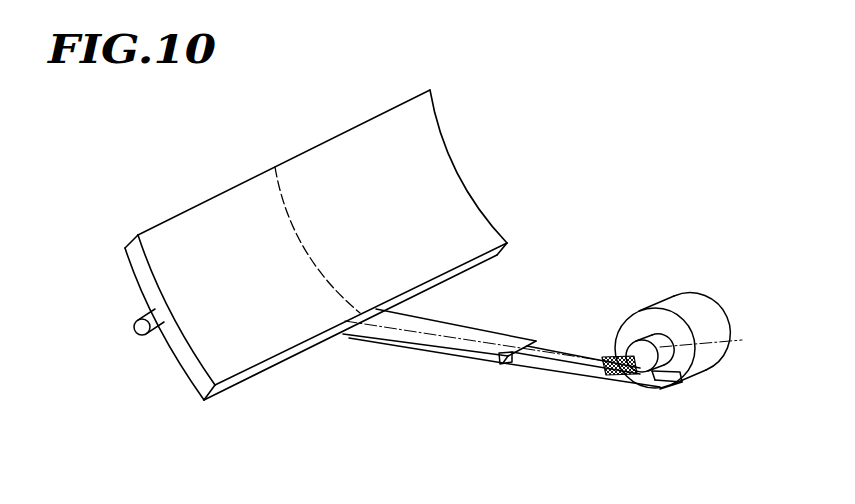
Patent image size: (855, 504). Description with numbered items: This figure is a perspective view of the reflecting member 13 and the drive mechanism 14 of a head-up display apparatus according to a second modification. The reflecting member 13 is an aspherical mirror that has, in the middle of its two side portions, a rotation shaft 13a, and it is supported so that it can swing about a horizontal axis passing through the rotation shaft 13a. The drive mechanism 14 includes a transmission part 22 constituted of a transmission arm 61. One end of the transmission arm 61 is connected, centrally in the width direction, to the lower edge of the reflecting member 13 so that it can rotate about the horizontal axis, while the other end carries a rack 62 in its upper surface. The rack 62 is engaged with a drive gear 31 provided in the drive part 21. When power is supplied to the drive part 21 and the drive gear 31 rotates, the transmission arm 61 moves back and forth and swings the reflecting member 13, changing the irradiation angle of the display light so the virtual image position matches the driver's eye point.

The reflecting member 13 is at (203, 353).
The rotation shaft 13a is at (133, 318).
The drive mechanism 14 is at (532, 316).
The drive part 21 is at (683, 319).
The transmission part 22 is at (589, 414).
The drive gear 31 is at (665, 348).
The transmission arm 61 is at (407, 348).
The rack 62 is at (590, 375).